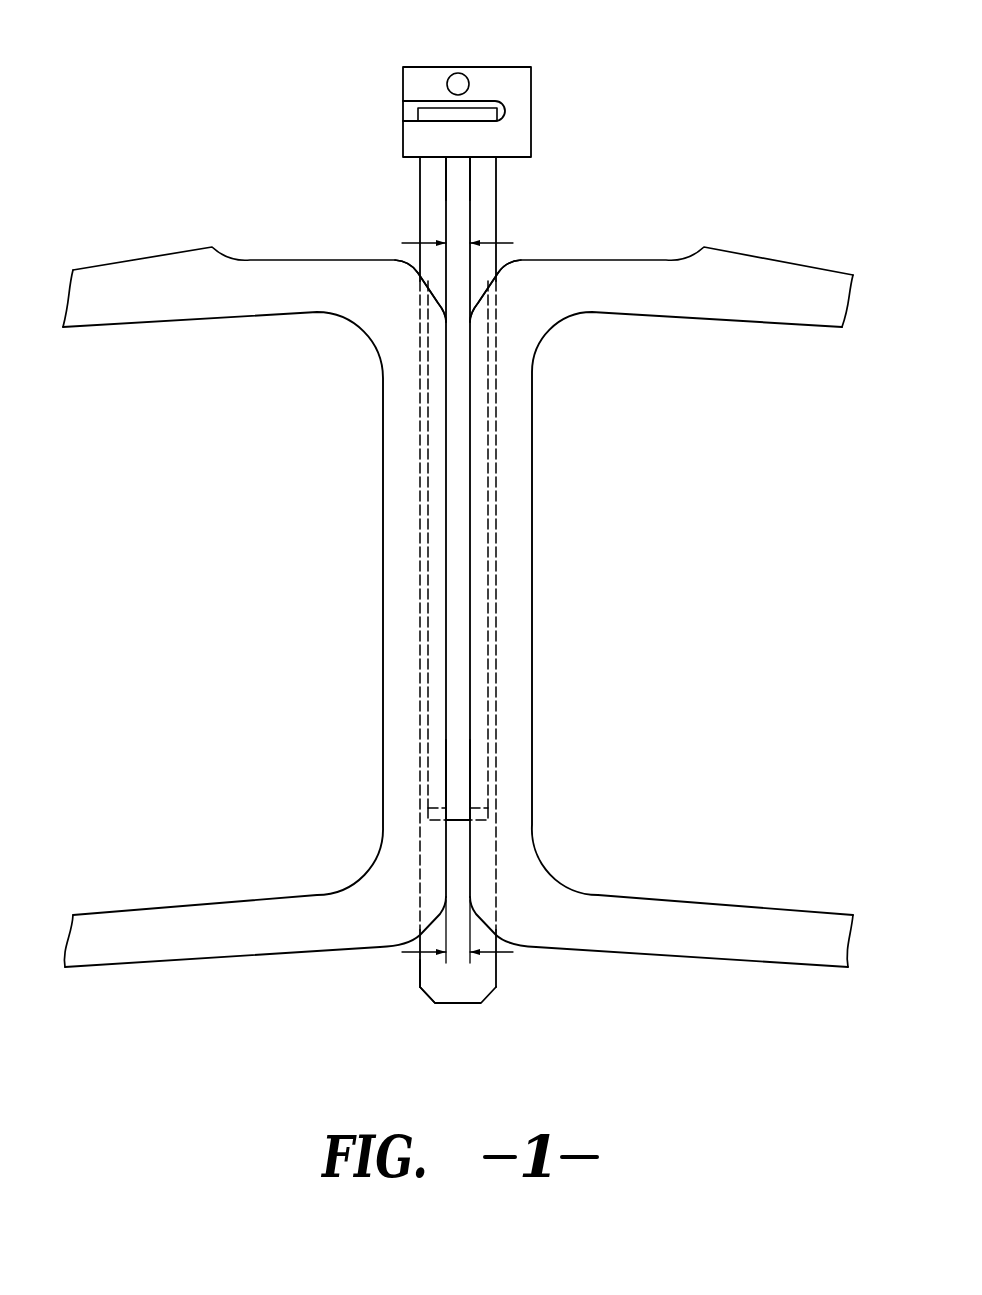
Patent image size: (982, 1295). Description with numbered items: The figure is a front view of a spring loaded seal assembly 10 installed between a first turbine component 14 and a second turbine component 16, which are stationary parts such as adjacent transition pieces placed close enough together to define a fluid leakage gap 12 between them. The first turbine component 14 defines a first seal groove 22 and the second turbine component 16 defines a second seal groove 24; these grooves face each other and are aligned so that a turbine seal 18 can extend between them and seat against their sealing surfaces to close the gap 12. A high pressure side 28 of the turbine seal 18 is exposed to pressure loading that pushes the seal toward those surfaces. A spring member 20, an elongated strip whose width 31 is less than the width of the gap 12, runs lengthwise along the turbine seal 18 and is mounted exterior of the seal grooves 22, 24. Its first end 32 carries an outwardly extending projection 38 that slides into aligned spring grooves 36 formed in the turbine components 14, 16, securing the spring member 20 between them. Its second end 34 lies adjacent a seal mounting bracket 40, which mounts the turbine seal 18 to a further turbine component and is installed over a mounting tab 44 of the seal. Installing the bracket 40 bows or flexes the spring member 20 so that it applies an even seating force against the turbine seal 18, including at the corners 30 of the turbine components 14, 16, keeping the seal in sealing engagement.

The spring loaded seal assembly 10 is at (323, 148).
The fluid leakage gap 12 is at (455, 950).
The first turbine component 14 is at (192, 265).
The second turbine component 16 is at (723, 265).
The turbine seal 18 is at (416, 978).
The spring member 20 is at (445, 213).
The first seal groove 22 is at (420, 540).
The second seal groove 24 is at (495, 542).
The high pressure side 28 is at (453, 993).
The corners 30 is at (418, 277).
The width 31 is at (457, 238).
The first end 32 is at (457, 783).
The second end 34 is at (455, 172).
The spring grooves 36 is at (427, 642).
The projection 38 is at (455, 822).
The seal mounting bracket 40 is at (490, 67).
The mounting tab 44 is at (415, 117).